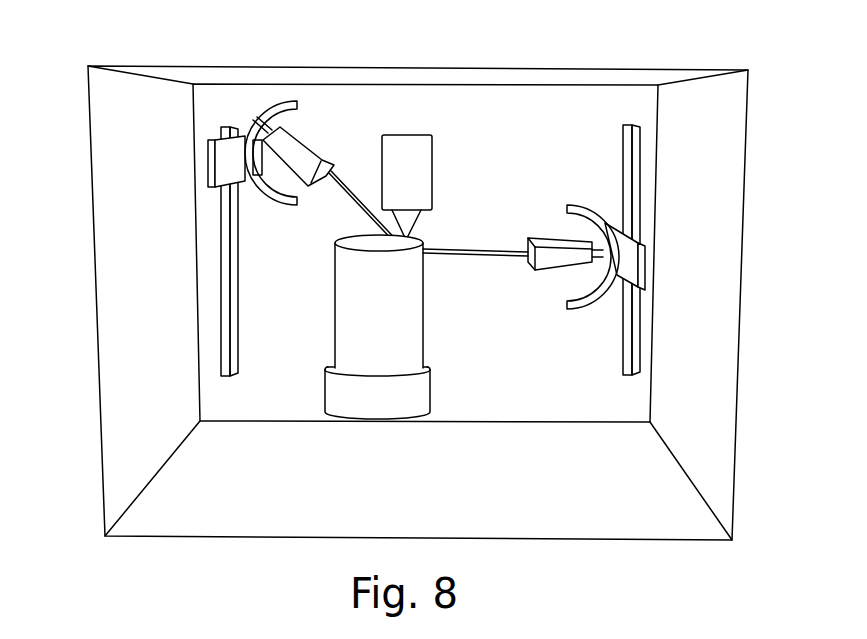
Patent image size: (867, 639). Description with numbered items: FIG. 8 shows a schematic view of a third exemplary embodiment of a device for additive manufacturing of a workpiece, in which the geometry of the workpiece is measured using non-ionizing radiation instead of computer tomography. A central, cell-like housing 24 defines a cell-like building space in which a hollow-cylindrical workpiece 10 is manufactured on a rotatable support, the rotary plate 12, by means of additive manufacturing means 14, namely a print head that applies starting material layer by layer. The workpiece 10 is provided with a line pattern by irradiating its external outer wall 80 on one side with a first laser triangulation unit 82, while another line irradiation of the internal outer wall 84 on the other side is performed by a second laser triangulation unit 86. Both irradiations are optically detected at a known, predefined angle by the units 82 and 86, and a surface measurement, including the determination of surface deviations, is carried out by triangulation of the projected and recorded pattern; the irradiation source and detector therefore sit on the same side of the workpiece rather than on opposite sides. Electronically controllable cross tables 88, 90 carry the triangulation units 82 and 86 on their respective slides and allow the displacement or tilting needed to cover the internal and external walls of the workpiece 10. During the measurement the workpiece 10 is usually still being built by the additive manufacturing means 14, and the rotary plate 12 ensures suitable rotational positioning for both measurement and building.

The workpiece 10 is at (404, 313).
The rotary plate device 12 is at (367, 404).
The additive manufacturing means 14 is at (405, 150).
The housing 24 is at (607, 499).
The external outer wall 80 is at (412, 267).
The first laser triangulation unit 82 is at (560, 226).
The internal outer wall 84 is at (345, 240).
The second laser triangulation unit 86 is at (303, 128).
The cross table 88 is at (643, 240).
The cross table 90 is at (222, 160).